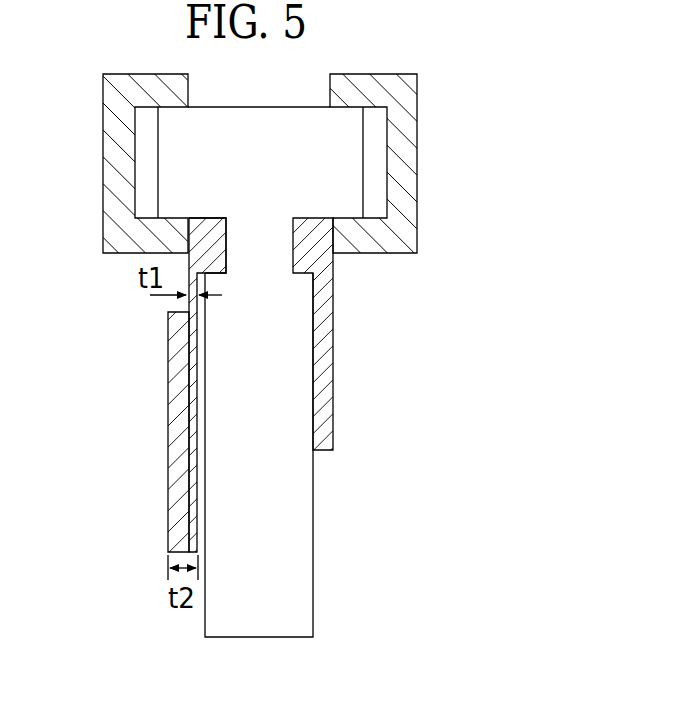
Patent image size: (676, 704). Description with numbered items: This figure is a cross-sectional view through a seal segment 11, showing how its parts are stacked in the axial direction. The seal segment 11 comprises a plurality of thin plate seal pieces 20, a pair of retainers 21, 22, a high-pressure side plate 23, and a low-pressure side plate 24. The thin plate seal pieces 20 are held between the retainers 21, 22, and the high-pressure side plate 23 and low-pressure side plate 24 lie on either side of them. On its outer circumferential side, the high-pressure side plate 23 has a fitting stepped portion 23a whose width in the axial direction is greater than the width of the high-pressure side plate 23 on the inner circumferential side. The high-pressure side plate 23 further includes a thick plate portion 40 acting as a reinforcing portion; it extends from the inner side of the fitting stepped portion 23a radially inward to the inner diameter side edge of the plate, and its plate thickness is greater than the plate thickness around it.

The seal segment 11 is at (560, 131).
The thin plate seal pieces 20 is at (297, 602).
The retainer 21 is at (103, 176).
The retainer 22 is at (418, 178).
The high-pressure side plate 23 is at (168, 353).
The fitting stepped portion 23a is at (211, 240).
The low-pressure side plate 24 is at (333, 336).
The thick plate portion 40 is at (168, 448).